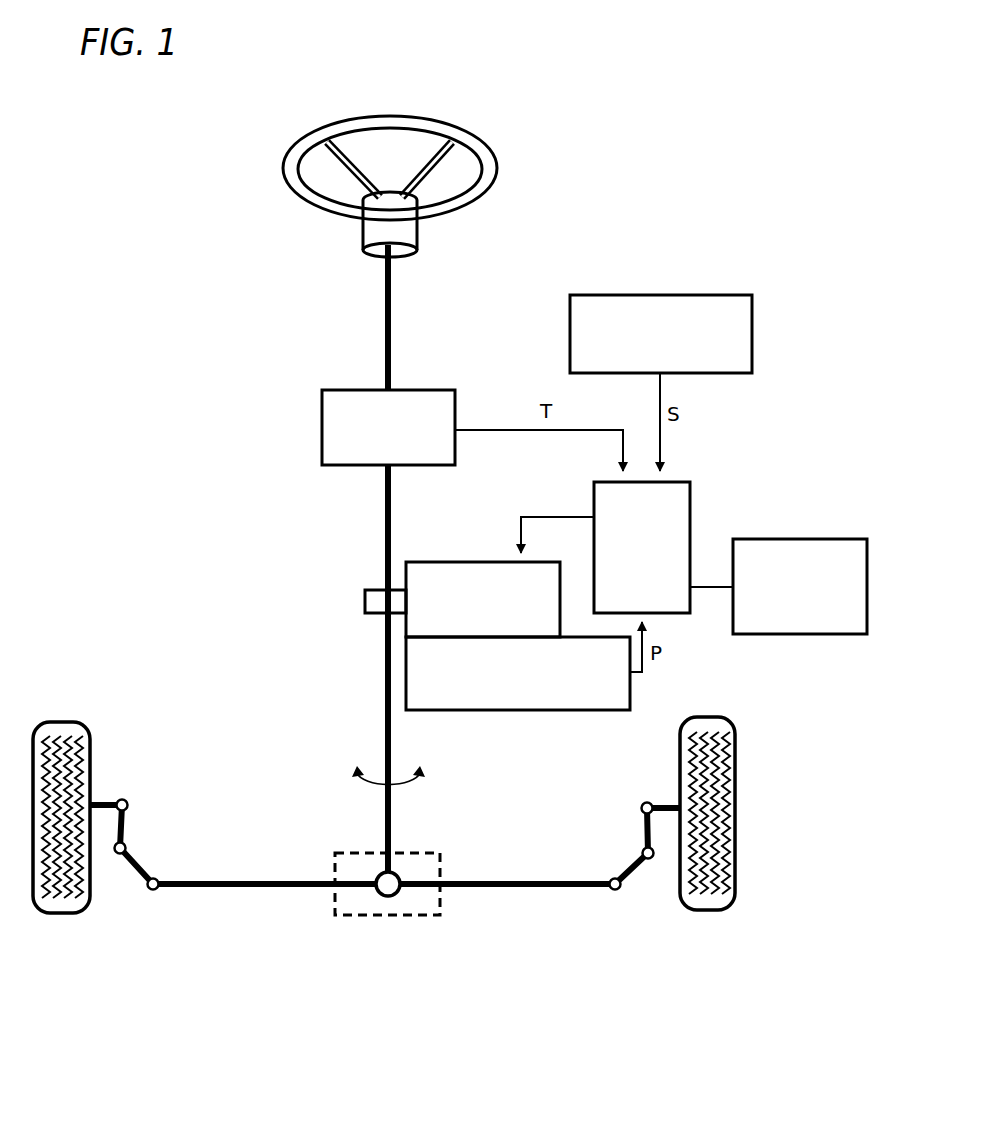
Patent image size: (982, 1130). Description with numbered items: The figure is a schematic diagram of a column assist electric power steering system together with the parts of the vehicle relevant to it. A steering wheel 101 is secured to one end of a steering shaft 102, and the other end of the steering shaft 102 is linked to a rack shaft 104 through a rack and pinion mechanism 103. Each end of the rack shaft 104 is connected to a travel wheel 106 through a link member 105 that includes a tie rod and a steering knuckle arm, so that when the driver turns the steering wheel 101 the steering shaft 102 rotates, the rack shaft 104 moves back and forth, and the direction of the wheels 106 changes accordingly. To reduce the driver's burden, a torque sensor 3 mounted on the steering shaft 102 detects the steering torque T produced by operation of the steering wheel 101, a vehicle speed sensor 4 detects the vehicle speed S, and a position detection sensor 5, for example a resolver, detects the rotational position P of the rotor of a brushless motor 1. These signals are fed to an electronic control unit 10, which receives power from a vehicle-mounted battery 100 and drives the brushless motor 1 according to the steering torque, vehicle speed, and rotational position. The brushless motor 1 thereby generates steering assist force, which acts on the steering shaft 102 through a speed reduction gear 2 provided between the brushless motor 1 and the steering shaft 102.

The brushless motor 1 is at (476, 562).
The speed reduction gear 2 is at (369, 590).
The torque sensor 3 is at (322, 430).
The vehicle speed sensor 4 is at (663, 295).
The position detection sensor 5 is at (495, 710).
The electronic control unit (ECU) 10 is at (690, 511).
The vehicle-mounted battery 100 is at (800, 634).
The steering wheel 101 is at (497, 168).
The steering shaft 102 is at (386, 326).
The rack and pinion mechanism 103 is at (392, 916).
The rack shaft 104 is at (520, 886).
The link member 105 is at (155, 850).
The travel wheel 106 is at (62, 913).